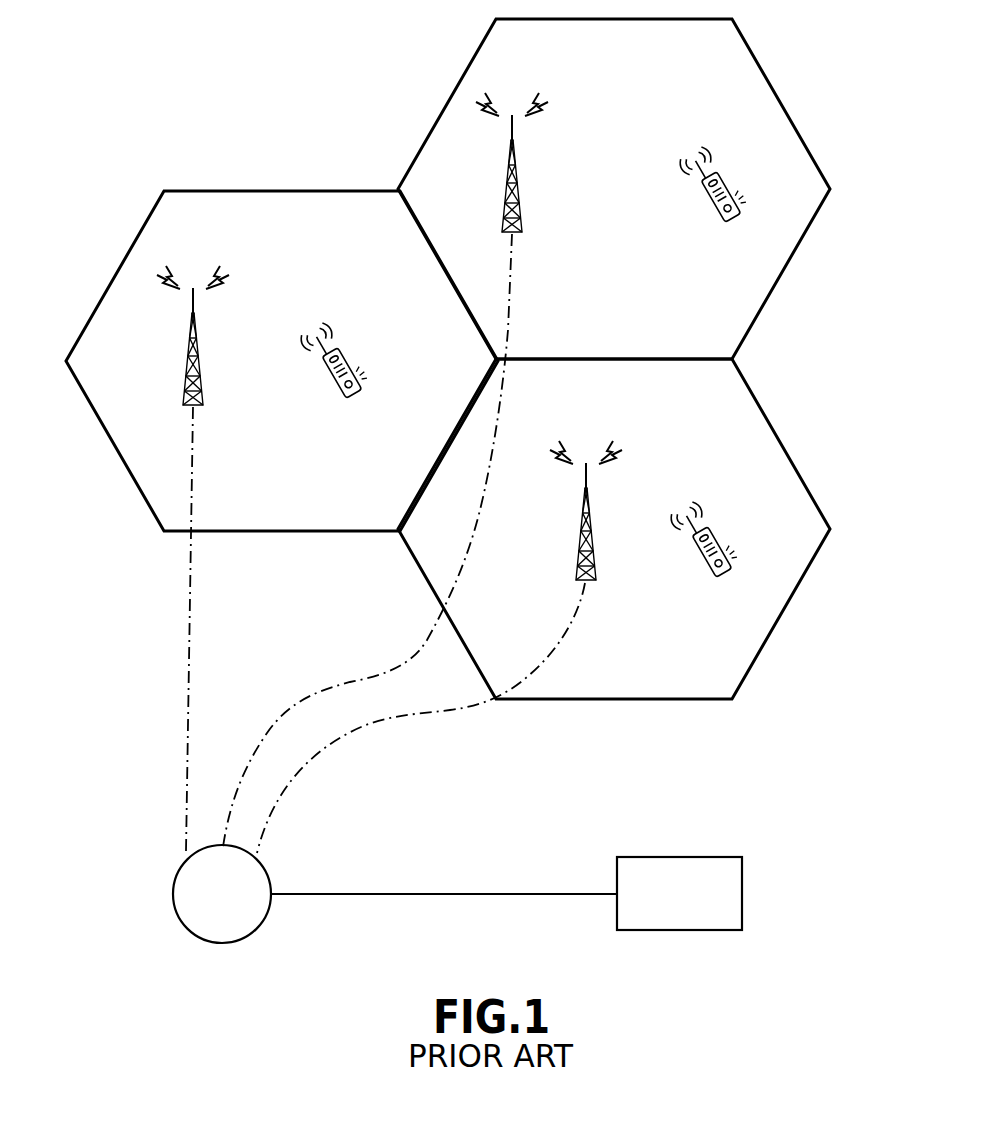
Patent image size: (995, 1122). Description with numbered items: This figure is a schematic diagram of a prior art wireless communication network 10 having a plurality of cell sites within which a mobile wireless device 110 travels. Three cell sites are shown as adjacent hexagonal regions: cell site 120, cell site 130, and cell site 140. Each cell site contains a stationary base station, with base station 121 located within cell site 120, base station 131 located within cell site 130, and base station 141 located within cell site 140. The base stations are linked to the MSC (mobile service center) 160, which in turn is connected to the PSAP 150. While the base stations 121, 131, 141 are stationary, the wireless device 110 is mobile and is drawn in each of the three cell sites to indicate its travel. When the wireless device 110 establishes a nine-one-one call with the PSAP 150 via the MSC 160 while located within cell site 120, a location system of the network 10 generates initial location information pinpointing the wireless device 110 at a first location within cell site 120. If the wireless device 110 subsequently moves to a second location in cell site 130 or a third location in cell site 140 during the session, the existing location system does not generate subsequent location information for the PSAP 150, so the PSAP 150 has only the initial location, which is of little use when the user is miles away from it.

The wireless communication network 10 is at (446, 382).
The wireless device 110 is at (710, 152).
The cell site 120 is at (800, 238).
The base station 121 is at (520, 183).
The cell site 130 is at (762, 658).
The base station 131 is at (582, 530).
The cell site 140 is at (100, 307).
The base station 141 is at (190, 351).
The PSAP 150 is at (742, 893).
The MSC 160 is at (213, 946).